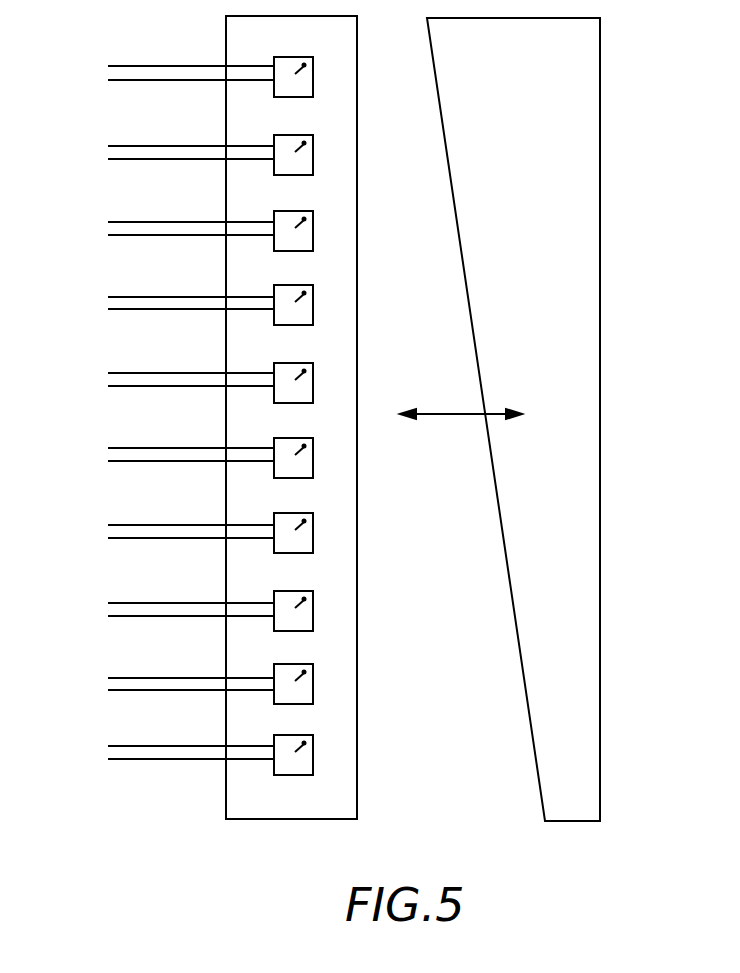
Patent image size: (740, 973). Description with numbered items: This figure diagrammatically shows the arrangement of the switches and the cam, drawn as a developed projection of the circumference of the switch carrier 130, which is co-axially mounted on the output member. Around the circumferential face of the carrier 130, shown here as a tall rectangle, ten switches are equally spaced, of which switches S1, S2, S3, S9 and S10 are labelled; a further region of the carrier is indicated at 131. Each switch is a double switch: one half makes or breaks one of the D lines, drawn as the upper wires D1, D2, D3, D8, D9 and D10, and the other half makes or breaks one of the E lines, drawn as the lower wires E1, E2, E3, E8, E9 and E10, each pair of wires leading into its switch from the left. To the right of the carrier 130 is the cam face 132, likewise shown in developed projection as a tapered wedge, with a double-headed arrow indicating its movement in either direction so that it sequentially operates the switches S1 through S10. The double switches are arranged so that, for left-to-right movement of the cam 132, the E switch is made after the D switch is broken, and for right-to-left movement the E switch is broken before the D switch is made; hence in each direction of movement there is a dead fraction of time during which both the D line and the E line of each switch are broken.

The switch carrier 130 is at (258, 793).
The housing side wall 131 is at (340, 544).
The cam face 132 is at (468, 302).
The switch S1 is at (313, 81).
The switch S2 is at (313, 154).
The switch S3 is at (313, 228).
The switch S9 is at (313, 685).
The switch S10 is at (313, 758).
The line D1 is at (168, 67).
The line D2 is at (183, 146).
The line D3 is at (183, 223).
The line D8 is at (183, 603).
The line D9 is at (192, 665).
The line D10 is at (189, 745).
The line E1 is at (127, 82).
The line E2 is at (127, 161).
The line E3 is at (127, 237).
The line E8 is at (127, 617).
The line E9 is at (137, 692).
The line E10 is at (137, 762).